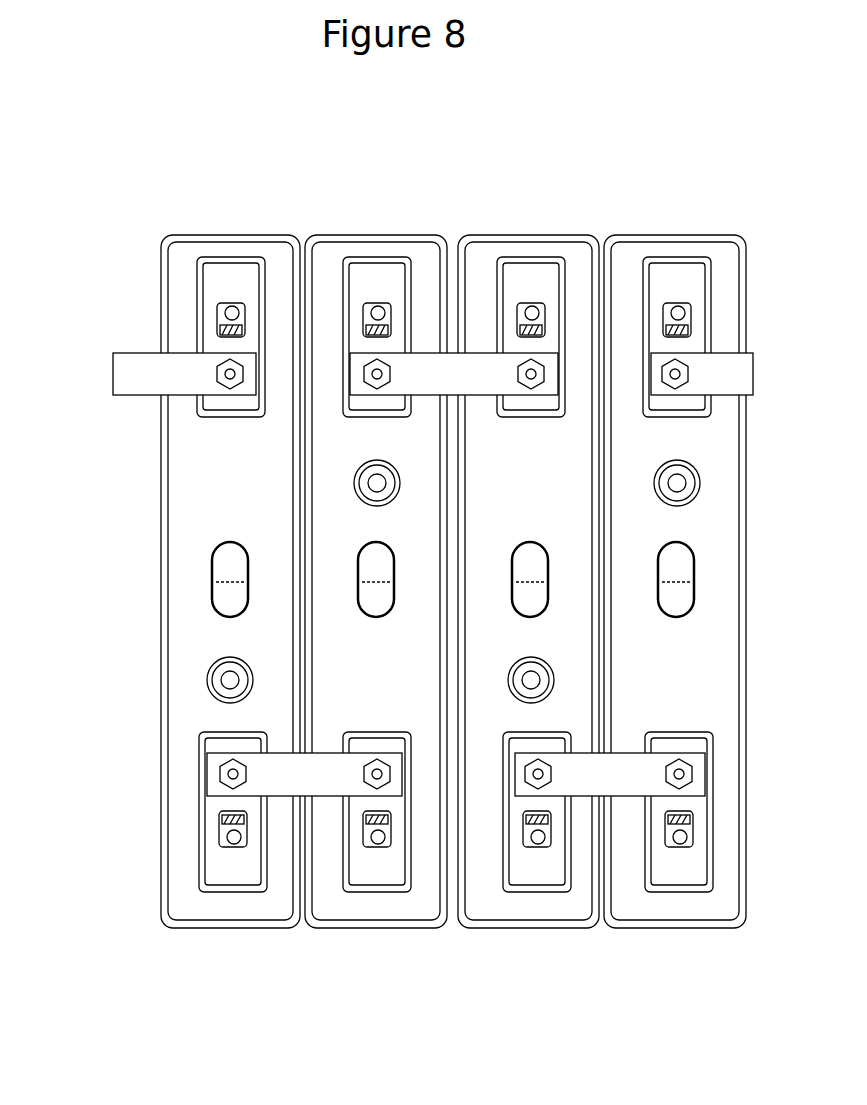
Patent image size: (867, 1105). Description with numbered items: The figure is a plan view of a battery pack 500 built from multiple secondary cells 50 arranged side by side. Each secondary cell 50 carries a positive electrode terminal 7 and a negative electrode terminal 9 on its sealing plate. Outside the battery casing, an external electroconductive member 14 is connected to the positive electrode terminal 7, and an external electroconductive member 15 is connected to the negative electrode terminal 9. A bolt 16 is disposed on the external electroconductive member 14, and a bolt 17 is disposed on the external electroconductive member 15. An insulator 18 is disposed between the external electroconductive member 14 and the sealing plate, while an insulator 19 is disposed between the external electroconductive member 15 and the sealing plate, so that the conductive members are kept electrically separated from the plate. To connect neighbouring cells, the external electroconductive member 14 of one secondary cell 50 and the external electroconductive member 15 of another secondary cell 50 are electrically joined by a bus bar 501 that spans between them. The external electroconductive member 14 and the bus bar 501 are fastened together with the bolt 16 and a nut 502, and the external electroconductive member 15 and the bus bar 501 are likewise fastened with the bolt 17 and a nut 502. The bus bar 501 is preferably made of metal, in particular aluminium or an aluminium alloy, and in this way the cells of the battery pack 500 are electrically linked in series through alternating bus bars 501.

The battery pack 500 is at (257, 102).
The secondary cell 50 is at (193, 635).
The bus bar 501 is at (320, 772).
The nut 502 is at (225, 372).
The positive electrode terminal 7 is at (373, 300).
The negative electrode terminal 9 is at (232, 306).
The external electroconductive member 14 is at (392, 293).
The external electroconductive member 15 is at (216, 293).
The bolt 16 is at (222, 770).
The bolt 17 is at (228, 380).
The insulator 18 is at (363, 258).
The insulator 19 is at (266, 263).